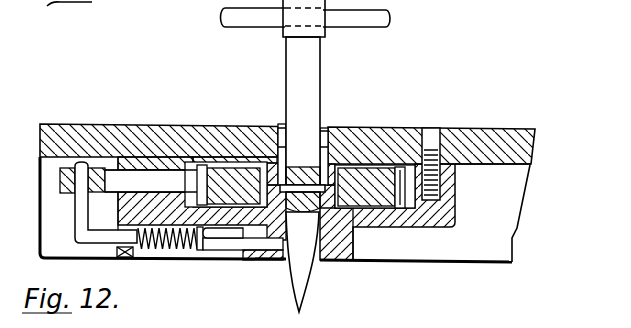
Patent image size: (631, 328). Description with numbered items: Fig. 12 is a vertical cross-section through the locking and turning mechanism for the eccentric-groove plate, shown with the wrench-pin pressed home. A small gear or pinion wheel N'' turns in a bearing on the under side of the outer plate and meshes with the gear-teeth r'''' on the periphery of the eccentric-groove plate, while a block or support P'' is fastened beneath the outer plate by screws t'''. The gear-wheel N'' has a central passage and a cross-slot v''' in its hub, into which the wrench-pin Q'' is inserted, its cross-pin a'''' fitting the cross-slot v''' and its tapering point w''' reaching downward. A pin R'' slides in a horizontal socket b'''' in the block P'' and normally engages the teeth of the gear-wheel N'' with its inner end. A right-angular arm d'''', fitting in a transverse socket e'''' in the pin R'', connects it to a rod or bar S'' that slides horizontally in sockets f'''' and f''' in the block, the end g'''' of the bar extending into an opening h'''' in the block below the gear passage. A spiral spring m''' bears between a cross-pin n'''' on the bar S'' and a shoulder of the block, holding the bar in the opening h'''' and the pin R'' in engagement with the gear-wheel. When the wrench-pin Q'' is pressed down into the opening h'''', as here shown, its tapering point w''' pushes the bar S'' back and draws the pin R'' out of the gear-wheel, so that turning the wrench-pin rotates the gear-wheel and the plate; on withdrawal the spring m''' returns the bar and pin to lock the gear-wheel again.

The horizontal socket b'''' is at (287, 132).
The gear-teeth r'''' is at (269, 124).
The wrench-pin Q'' is at (305, 92).
The cross-slot v''' is at (345, 128).
The screws t''' is at (437, 150).
The cross-pin a'''' is at (302, 180).
The transverse socket e'''' is at (55, 180).
The pin R'' is at (151, 181).
The right-angular arm d'''' is at (90, 202).
The sockets f'''' is at (129, 267).
The spiral spring m''' is at (170, 257).
The rod or bar S'' is at (235, 265).
The cross-pin n'''' is at (225, 238).
The end of rod g'''' is at (298, 262).
The socket f''' is at (263, 270).
The tapering point w''' is at (317, 281).
The opening h'''' is at (351, 246).
The gear-wheel N'' is at (375, 211).
The block or support P'' is at (387, 212).